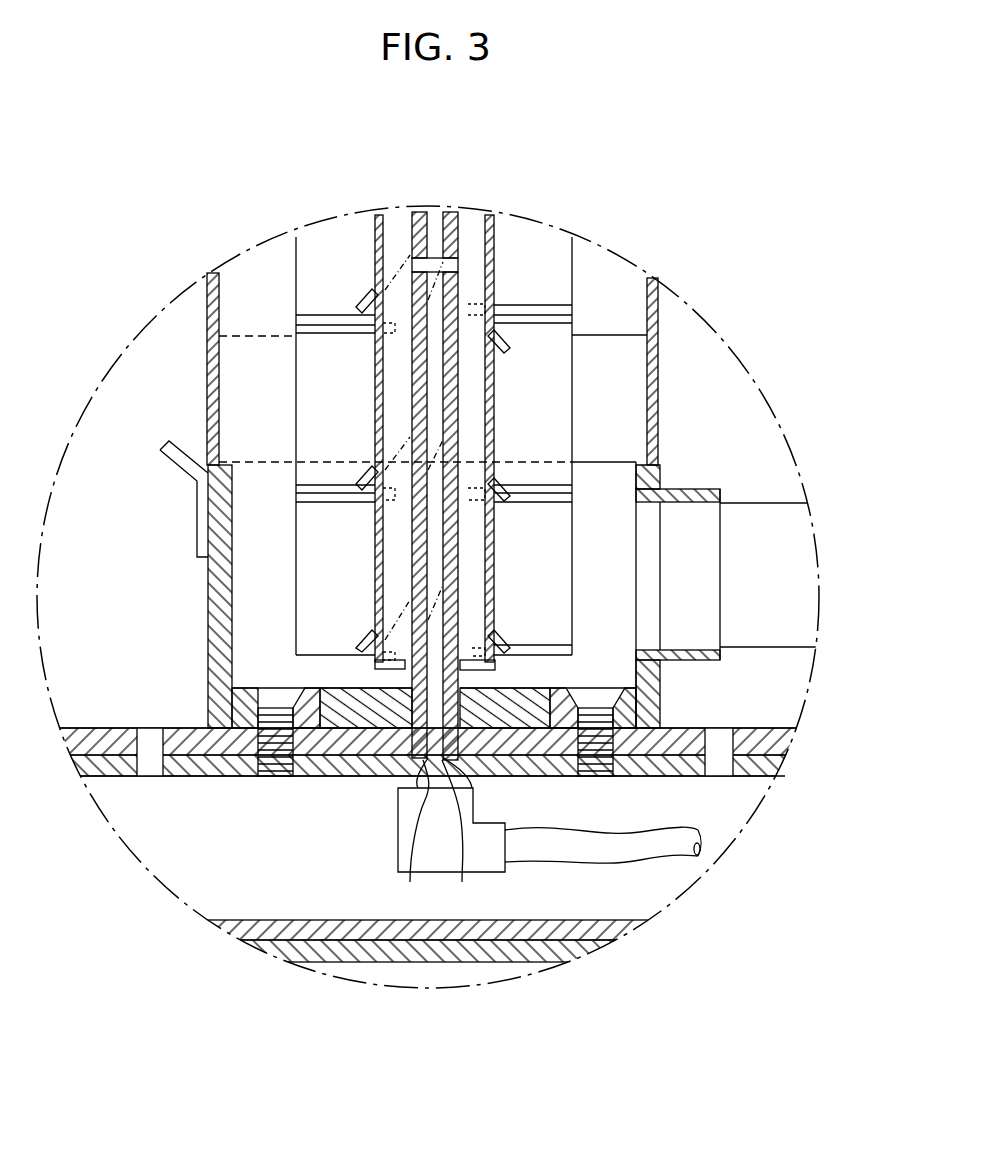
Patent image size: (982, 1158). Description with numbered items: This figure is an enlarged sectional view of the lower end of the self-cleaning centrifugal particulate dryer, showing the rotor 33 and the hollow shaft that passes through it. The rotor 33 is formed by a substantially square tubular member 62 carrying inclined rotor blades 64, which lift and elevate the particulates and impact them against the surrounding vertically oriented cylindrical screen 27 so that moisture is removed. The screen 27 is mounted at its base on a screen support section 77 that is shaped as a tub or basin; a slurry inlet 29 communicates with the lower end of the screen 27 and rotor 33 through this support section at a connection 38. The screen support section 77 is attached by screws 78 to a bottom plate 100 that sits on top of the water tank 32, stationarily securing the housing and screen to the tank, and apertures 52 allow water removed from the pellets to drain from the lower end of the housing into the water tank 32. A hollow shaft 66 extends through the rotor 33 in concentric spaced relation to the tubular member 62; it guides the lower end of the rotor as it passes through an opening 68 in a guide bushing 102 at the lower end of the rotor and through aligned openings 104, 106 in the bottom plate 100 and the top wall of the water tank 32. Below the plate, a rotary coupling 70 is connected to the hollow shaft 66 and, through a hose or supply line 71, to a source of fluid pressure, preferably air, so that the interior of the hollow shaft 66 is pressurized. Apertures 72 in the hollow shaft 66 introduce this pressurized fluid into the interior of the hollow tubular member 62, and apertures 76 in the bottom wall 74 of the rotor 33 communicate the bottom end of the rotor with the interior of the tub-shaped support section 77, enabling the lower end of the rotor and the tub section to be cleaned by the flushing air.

The screen 27 is at (656, 357).
The slurry inlet 29 is at (762, 512).
The water tank 32 is at (762, 765).
The rotor 33 is at (506, 243).
The connection 38 is at (660, 488).
The apertures 52 is at (150, 765).
The square tubular member 62 is at (497, 268).
The rotor blades 64 is at (542, 362).
The hollow shaft 66 is at (418, 515).
The opening 68 is at (410, 706).
The rotary coupling 70 is at (488, 862).
The supply line 71 is at (655, 860).
The apertures 72 is at (413, 262).
The bottom wall 74 is at (470, 672).
The apertures 76 is at (395, 667).
The screen support section 77 is at (208, 598).
The screws 78 is at (275, 770).
The bottom plate 100 is at (754, 727).
The guide bushing 102 is at (502, 717).
The opening 104 is at (460, 835).
The opening 106 is at (407, 835).